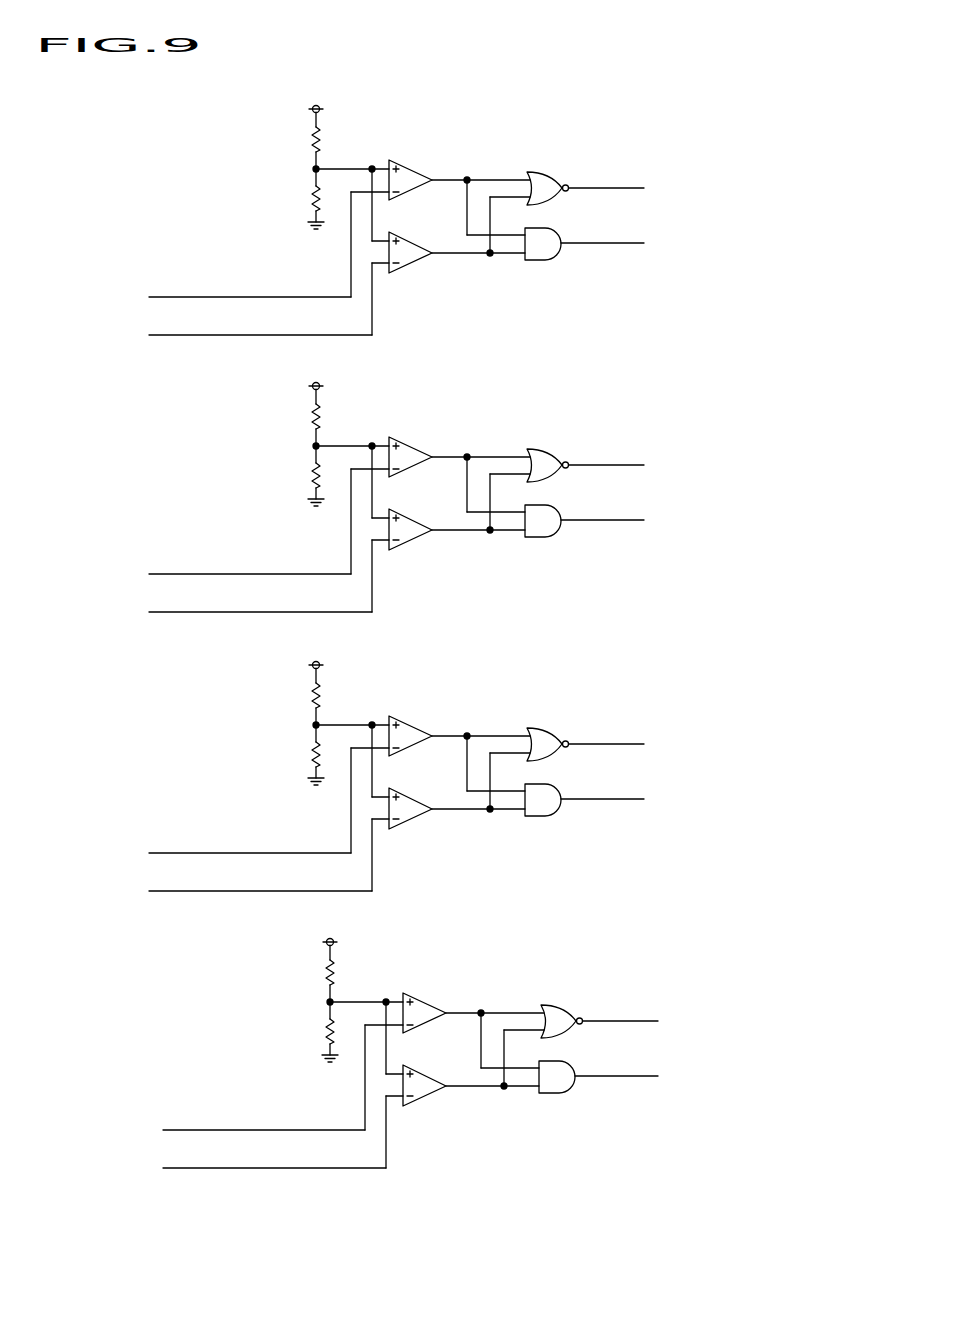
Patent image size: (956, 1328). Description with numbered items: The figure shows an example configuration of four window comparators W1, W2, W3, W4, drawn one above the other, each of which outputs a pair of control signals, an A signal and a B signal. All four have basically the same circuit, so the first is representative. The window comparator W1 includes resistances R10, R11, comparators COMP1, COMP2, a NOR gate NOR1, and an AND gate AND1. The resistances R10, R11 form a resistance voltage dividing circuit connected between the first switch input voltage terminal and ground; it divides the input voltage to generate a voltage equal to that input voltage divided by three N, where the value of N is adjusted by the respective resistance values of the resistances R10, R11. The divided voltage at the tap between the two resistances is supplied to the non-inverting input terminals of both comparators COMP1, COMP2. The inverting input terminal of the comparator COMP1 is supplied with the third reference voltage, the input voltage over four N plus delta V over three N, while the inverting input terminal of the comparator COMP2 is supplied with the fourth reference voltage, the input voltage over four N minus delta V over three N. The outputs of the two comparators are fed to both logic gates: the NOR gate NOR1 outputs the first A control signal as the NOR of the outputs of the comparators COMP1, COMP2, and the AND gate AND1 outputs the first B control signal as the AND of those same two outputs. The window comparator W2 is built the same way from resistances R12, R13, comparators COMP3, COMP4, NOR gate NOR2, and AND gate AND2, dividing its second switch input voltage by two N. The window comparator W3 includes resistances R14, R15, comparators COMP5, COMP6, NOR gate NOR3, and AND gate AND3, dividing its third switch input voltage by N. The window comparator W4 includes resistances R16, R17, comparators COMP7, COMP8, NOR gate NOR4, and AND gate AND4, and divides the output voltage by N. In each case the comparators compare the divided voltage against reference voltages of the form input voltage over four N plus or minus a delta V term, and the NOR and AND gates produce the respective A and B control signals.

The window comparator W1 is at (516, 119).
The window comparator W2 is at (396, 484).
The window comparator W3 is at (396, 763).
The window comparator W4 is at (410, 1040).
The resistance R10 is at (307, 143).
The resistance R11 is at (307, 196).
The resistance R12 is at (288, 417).
The resistance R13 is at (288, 474).
The resistance R14 is at (288, 696).
The resistance R15 is at (288, 753).
The resistance R16 is at (302, 973).
The resistance R17 is at (302, 1030).
The comparator COMP1 is at (406, 161).
The comparator COMP2 is at (406, 234).
The comparator COMP3 is at (415, 445).
The comparator COMP4 is at (415, 518).
The comparator COMP5 is at (415, 724).
The comparator COMP6 is at (415, 797).
The comparator COMP7 is at (429, 1001).
The comparator COMP8 is at (429, 1074).
The NOR gate NOR1 is at (544, 170).
The NOR gate NOR2 is at (544, 451).
The NOR gate NOR3 is at (544, 730).
The NOR gate NOR4 is at (558, 1007).
The AND gate AND1 is at (541, 262).
The AND gate AND2 is at (544, 538).
The AND gate AND3 is at (544, 817).
The AND gate AND4 is at (558, 1094).